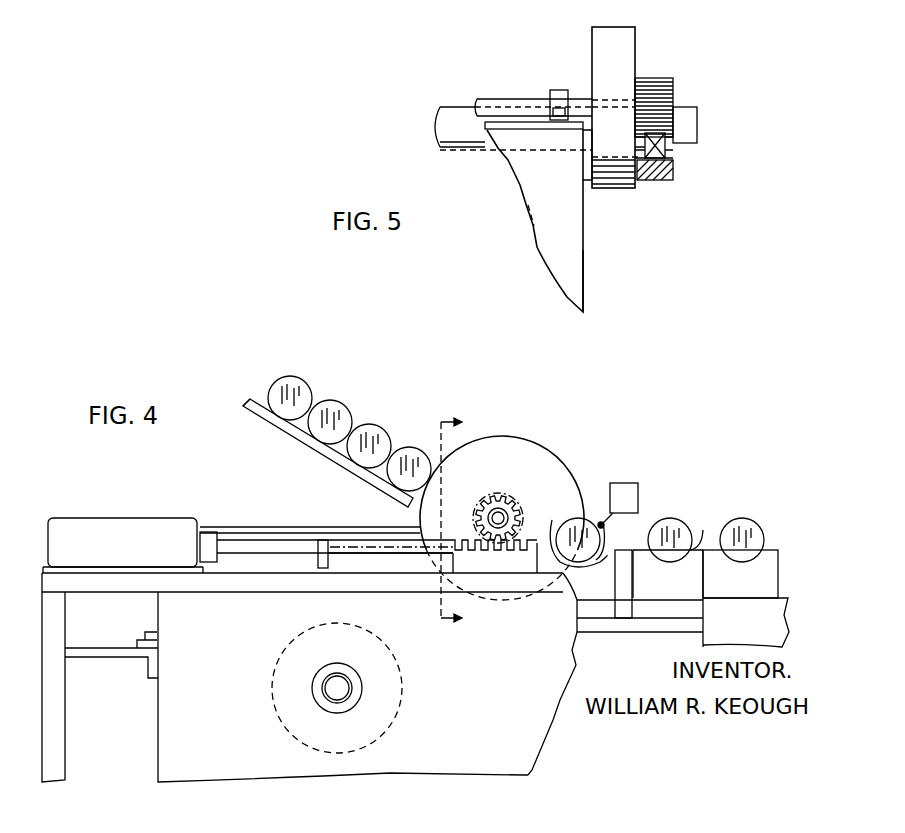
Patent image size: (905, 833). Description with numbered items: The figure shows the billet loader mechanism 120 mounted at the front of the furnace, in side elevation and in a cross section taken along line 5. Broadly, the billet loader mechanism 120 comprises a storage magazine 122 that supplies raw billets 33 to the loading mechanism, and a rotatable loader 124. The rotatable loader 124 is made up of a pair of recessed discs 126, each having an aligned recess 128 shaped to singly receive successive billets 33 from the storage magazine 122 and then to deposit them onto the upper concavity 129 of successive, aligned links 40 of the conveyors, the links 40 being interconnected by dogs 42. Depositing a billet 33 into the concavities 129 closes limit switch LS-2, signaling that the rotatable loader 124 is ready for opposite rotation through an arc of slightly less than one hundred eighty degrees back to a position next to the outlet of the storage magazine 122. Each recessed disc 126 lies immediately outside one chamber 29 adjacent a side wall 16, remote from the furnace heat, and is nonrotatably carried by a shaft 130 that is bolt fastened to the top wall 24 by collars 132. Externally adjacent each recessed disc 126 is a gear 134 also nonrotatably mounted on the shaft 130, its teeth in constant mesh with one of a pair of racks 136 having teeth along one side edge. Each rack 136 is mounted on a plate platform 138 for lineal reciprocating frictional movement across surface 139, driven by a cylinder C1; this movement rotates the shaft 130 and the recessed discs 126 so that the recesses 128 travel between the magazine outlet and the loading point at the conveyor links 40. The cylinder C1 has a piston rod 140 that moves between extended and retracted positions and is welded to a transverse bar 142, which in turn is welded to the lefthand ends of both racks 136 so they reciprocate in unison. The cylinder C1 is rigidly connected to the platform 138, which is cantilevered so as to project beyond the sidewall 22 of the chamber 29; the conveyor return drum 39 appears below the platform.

In FIG. 5, the recessed disc 126 is at (628, 43).
In FIG. 4, the recessed disc 126 is at (505, 447).
In FIG. 5, the shaft 130 is at (495, 108).
In FIG. 4, the shaft 130 is at (498, 512).
In FIG. 5, the collar 132 is at (557, 88).
In FIG. 5, the gear 134 is at (676, 82).
In FIG. 4, the gear 134 is at (485, 510).
In FIG. 5, the billet 33 is at (440, 126).
In FIG. 4, the billet 33 is at (330, 400).
In FIG. 5, the rack 136 is at (668, 142).
In FIG. 4, the rack 136 is at (340, 567).
In FIG. 5, the surface 139 is at (671, 150).
In FIG. 4, the surface 139 is at (405, 573).
In FIG. 5, the plate platform 138 is at (653, 181).
In FIG. 4, the plate platform 138 is at (226, 583).
In FIG. 5, the top wall 24 is at (530, 130).
In FIG. 4, the top wall 24 is at (214, 528).
In FIG. 5, the sidewall 22 is at (563, 236).
In FIG. 5, the chamber 29 is at (533, 204).
In FIG. 5, the side wall 16 is at (583, 262).
In FIG. 4, the return drum 39 is at (385, 700).
In FIG. 4, the cylinder C1 is at (125, 527).
In FIG. 4, the piston rod 140 is at (245, 545).
In FIG. 4, the transverse bar 142 is at (318, 545).
In FIG. 4, the rotatable loader 124 is at (565, 458).
In FIG. 4, the section line 5 is at (459, 522).
In FIG. 4, the storage magazine 122 is at (300, 437).
In FIG. 4, the billet loader mechanism 120 is at (372, 412).
In FIG. 4, the recess 128 is at (556, 530).
In FIG. 4, the upper concavity 129 is at (603, 548).
In FIG. 4, the limit switch LS-2 is at (640, 487).
In FIG. 4, the dog 42 is at (622, 610).
In FIG. 4, the link 40 is at (587, 610).